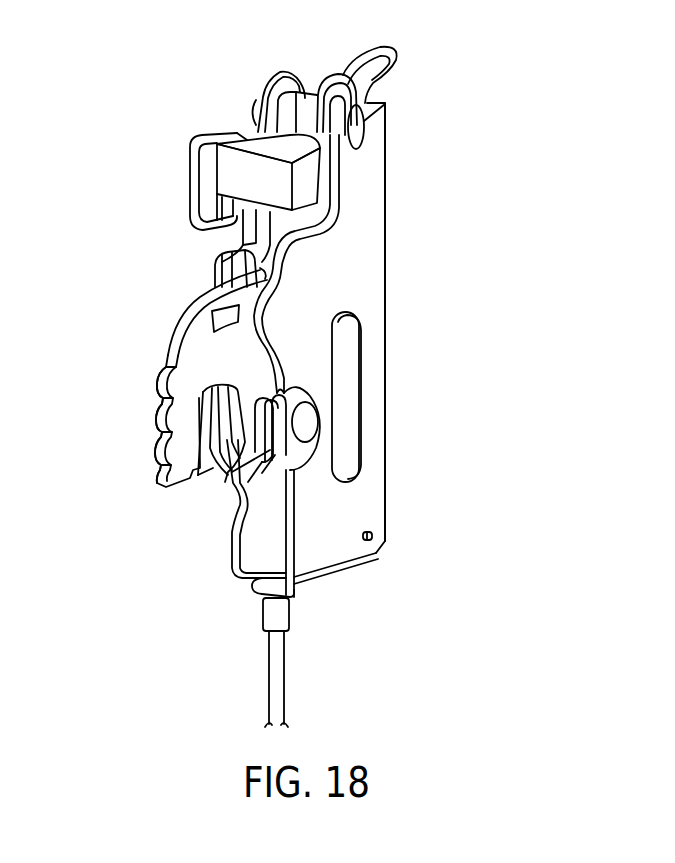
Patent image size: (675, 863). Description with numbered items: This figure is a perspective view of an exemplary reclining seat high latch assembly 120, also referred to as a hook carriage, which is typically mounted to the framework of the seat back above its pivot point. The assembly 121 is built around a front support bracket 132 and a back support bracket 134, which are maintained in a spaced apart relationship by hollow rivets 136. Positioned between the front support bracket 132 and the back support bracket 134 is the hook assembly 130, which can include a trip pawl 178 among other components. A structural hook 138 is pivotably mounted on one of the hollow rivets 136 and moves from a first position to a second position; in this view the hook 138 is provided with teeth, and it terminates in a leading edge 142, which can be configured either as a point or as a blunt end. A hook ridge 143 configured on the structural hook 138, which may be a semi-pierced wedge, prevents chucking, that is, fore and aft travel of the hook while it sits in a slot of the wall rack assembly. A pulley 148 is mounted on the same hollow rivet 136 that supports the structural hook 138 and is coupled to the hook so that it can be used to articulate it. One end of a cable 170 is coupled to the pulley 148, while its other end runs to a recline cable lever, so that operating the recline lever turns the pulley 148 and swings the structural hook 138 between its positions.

The reclining seat high latch assembly 120 is at (480, 275).
The housing 121 is at (480, 240).
The hook assembly 130 is at (141, 423).
The front support bracket 132 is at (372, 497).
The back support bracket 134 is at (243, 577).
The hollow rivets 136 is at (312, 98).
The structural hook 138 is at (177, 342).
The leading edge 142 is at (187, 483).
The hook ridge 143 is at (220, 318).
The pulley 148 is at (230, 481).
The cable 170 is at (283, 665).
The trip pawl 178 is at (248, 143).